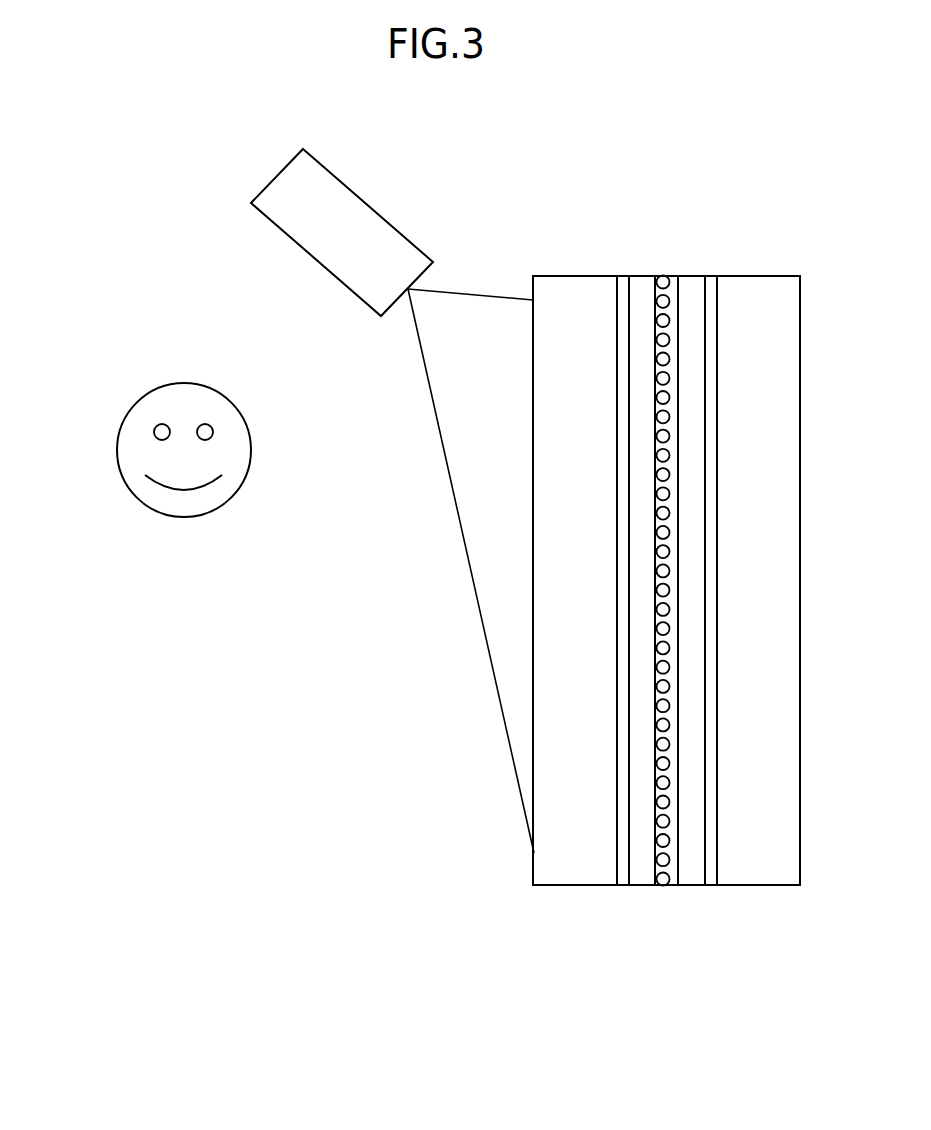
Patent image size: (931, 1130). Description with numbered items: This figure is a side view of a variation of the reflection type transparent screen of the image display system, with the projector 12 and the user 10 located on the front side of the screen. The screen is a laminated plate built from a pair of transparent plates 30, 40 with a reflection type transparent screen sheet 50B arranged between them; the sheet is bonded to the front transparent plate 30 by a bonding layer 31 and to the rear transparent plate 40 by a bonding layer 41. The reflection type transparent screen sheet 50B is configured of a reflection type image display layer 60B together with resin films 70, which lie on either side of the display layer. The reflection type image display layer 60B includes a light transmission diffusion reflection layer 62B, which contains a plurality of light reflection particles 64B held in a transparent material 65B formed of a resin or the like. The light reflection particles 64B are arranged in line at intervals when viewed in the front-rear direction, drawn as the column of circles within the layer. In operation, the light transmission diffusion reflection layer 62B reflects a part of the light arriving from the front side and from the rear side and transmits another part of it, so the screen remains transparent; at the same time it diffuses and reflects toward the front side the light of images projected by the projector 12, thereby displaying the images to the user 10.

The user 10 is at (132, 413).
The projector 12 is at (368, 205).
The transparent plate 30 is at (575, 285).
The bonding layer 31 is at (623, 285).
The transparent plate 40 is at (758, 285).
The bonding layer 41 is at (710, 285).
The reflection type transparent screen sheet 50B is at (778, 985).
The reflection type image display layer 60B is at (715, 983).
The light transmission diffusion reflection layer 62B is at (660, 983).
The light reflection particles 64B is at (660, 888).
The transparent material 65B is at (675, 888).
The resin films 70 is at (642, 888).